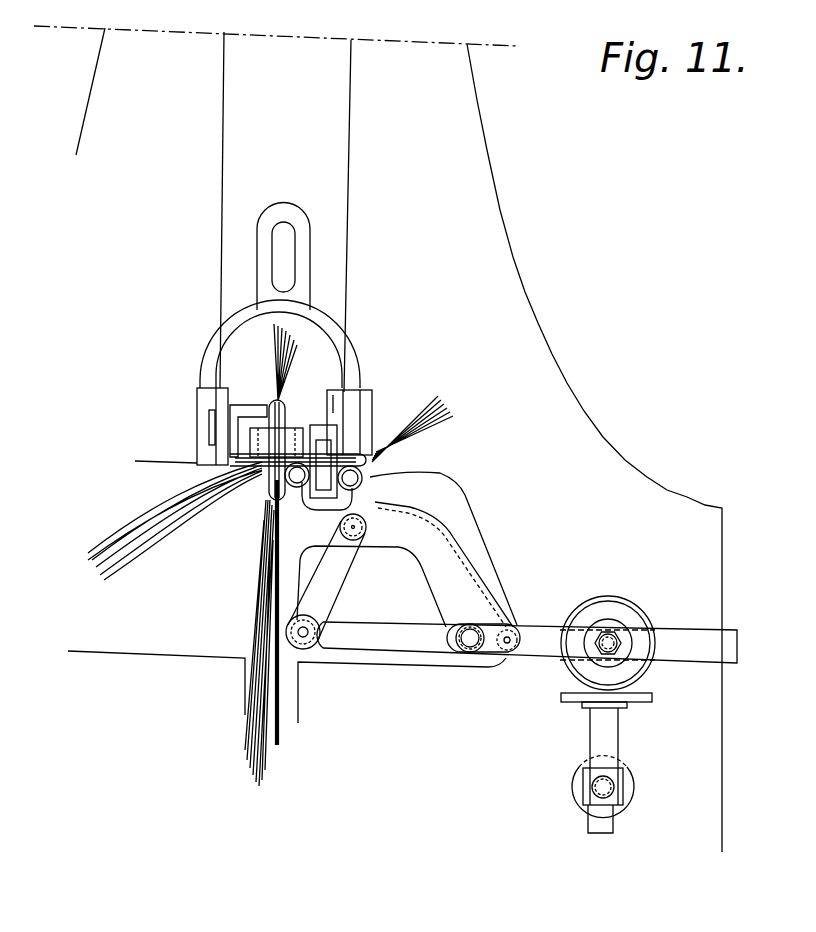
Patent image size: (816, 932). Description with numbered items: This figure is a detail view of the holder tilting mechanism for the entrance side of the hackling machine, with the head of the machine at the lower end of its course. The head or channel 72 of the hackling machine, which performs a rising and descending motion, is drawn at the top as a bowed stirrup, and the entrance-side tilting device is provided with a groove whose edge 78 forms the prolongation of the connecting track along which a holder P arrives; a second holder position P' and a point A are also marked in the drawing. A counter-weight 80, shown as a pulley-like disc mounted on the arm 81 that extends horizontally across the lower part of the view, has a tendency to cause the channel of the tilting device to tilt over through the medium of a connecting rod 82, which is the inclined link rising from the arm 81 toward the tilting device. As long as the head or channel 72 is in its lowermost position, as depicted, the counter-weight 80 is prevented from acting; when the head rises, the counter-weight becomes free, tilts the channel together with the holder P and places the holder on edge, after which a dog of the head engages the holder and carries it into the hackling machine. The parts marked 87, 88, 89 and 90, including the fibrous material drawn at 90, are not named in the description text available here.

The head or channel 72 is at (342, 352).
The edge of groove 78 is at (372, 484).
The counter-weight 80 is at (633, 617).
The arm 81 is at (529, 626).
The connecting rod 82 is at (330, 581).
The needle pin 87 is at (285, 483).
The holder 88 is at (316, 510).
The bracket 89 is at (647, 699).
The sliver 90 is at (257, 624).
The holder P is at (317, 422).
The point P prime P' is at (390, 421).
The point A is at (324, 407).